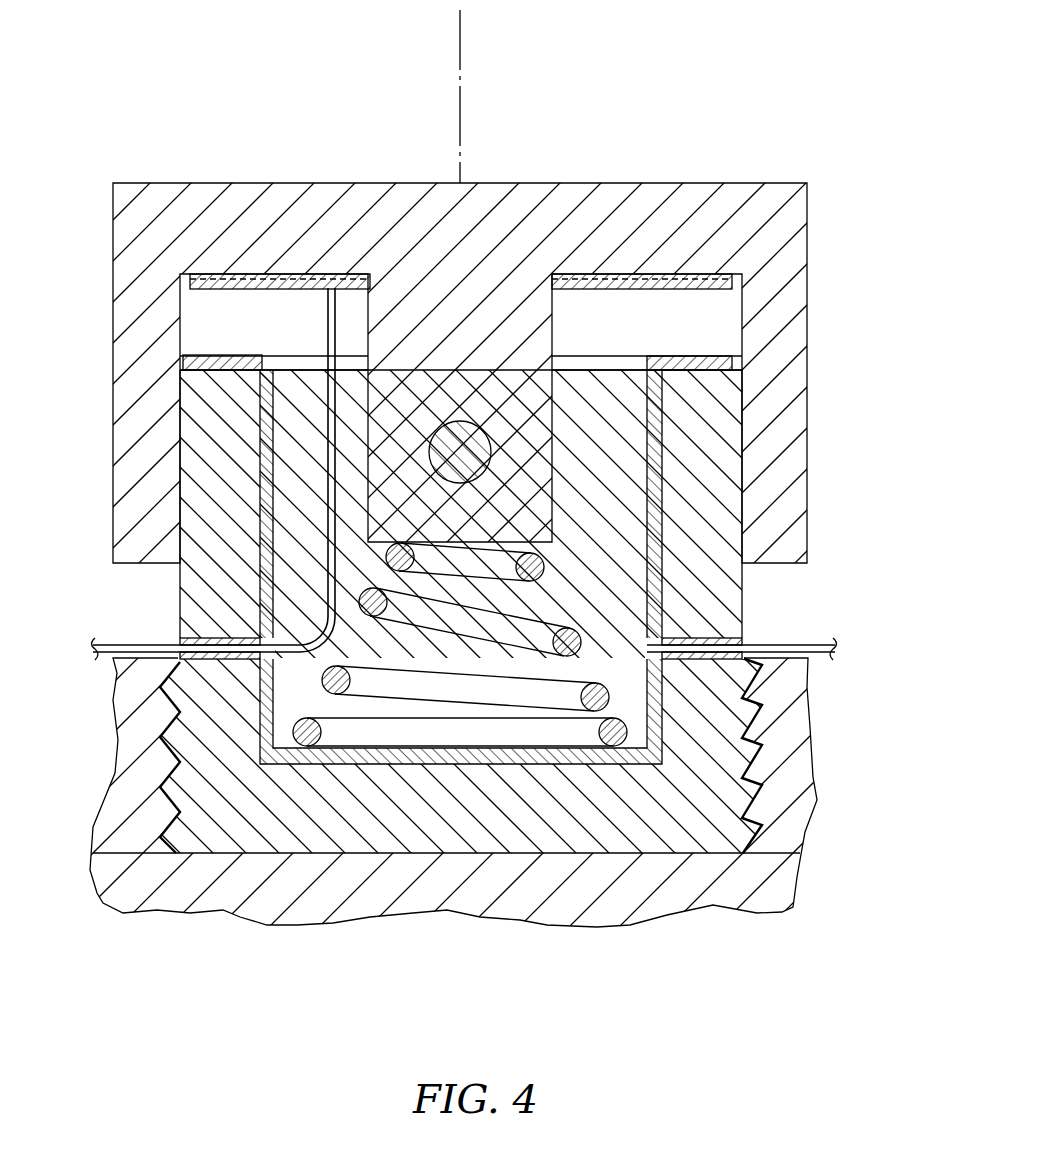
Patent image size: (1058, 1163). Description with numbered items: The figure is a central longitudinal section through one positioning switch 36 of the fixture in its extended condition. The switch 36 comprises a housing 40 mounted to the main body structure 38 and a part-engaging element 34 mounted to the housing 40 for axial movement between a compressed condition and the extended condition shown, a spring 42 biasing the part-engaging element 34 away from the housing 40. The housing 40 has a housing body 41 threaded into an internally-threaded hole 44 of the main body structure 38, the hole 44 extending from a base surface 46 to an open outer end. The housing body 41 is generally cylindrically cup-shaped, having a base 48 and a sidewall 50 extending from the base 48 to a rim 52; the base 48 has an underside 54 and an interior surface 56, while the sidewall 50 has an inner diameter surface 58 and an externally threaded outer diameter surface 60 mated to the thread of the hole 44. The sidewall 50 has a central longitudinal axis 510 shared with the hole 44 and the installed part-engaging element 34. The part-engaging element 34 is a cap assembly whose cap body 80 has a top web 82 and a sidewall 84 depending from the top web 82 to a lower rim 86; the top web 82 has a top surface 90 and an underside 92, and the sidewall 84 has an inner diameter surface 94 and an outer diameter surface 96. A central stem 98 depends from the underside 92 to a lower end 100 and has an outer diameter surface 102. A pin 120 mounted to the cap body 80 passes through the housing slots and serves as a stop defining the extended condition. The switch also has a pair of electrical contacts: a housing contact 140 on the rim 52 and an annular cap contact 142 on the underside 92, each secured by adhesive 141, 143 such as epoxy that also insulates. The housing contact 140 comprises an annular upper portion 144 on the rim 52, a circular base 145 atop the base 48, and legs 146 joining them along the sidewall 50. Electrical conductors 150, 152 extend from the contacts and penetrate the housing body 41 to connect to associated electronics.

The part-engaging element 34 is at (805, 155).
The switch 36 is at (228, 125).
The main body structure 38 is at (222, 890).
The housing 40 is at (822, 676).
The housing body 41 is at (714, 540).
The spring 42 is at (530, 632).
The hole 44 is at (188, 748).
The base surface 46 is at (250, 850).
The base 48 is at (410, 840).
The sidewall 50 is at (722, 712).
The rim 52 is at (217, 355).
The underside 54 is at (680, 855).
The interior surface 56 is at (658, 747).
The inner diameter surface 58 is at (270, 418).
The outer diameter surface 60 is at (180, 573).
The cap body 80 is at (628, 226).
The top web 82 is at (722, 222).
The sidewall 84 is at (780, 360).
The lower rim 86 is at (790, 573).
The top surface 90 is at (545, 183).
The underside 92 is at (295, 295).
The inner diameter surface 94 is at (185, 412).
The outer diameter surface 96 is at (113, 330).
The stem 98 is at (520, 412).
The lower end 100 is at (507, 540).
The outer diameter surface 102 is at (555, 492).
The pin 120 is at (470, 460).
The housing electrical contact 140 is at (737, 356).
The adhesive 141 is at (656, 492).
The cap contact 142 is at (728, 280).
The adhesive 143 is at (717, 272).
The annular upper portion 144 is at (240, 360).
The circular base 145 is at (565, 763).
The legs 146 is at (665, 465).
The electrical conductor 150 is at (840, 652).
The electrical conductor 152 is at (263, 676).
The central longitudinal axis 510 is at (460, 30).